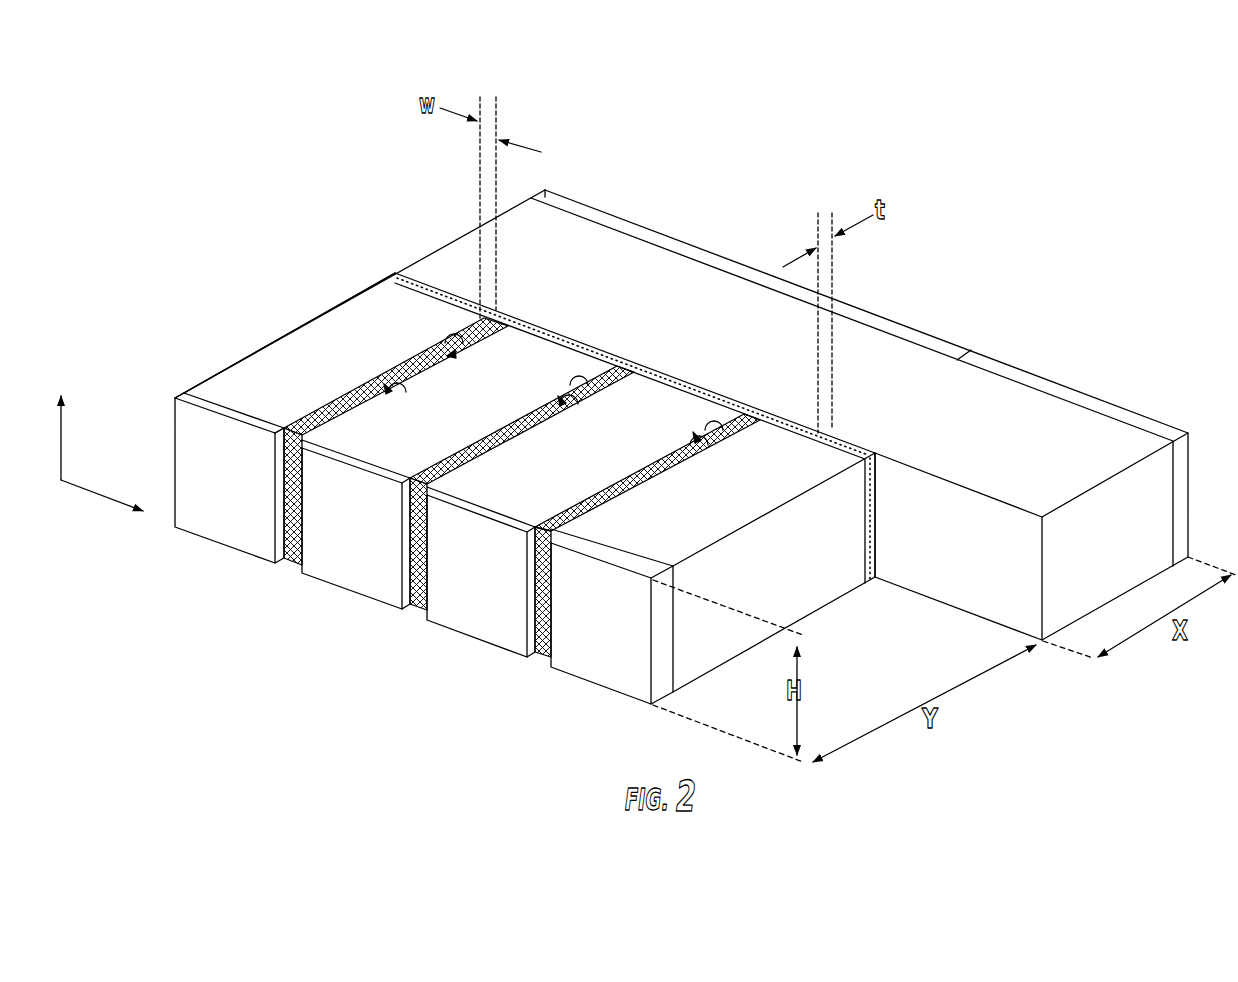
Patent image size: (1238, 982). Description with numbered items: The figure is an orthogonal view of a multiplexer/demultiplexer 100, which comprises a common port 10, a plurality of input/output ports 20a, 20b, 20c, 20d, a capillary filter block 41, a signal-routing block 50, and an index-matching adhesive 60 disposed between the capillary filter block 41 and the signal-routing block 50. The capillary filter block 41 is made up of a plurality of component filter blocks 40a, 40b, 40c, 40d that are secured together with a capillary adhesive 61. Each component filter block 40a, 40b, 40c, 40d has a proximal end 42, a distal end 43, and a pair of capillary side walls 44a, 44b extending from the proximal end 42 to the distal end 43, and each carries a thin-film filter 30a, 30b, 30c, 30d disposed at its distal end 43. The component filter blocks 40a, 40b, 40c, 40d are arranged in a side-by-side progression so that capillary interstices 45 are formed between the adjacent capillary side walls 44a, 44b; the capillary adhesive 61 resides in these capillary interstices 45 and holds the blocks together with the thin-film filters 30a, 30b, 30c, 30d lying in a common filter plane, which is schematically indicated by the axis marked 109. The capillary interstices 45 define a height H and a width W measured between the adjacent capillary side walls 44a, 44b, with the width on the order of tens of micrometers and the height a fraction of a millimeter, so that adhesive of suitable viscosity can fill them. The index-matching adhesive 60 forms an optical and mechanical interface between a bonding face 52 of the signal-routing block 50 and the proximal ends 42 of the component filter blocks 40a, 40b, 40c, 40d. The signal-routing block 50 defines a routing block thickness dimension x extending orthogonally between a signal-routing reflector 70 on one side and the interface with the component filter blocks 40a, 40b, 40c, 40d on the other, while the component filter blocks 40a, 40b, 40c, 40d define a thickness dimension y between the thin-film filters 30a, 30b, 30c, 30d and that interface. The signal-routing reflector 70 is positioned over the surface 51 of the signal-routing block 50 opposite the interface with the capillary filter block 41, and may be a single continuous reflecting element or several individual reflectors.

The multiplexer/demultiplexer 100 is at (1045, 168).
The common port 10 is at (1168, 358).
The input/output port 20a is at (548, 690).
The input/output port 20b is at (425, 640).
The input/output port 20c is at (300, 590).
The input/output port 20d is at (175, 542).
The thin-film filter 30a is at (600, 662).
The thin-film filter 30b is at (472, 617).
The thin-film filter 30c is at (348, 570).
The thin-film filter 30d is at (262, 535).
The component filter block 40a is at (810, 597).
The component filter block 40b is at (665, 393).
The component filter block 40c is at (530, 345).
The component filter block 40d is at (312, 343).
The capillary filter block 41 is at (214, 320).
The proximal end 42 is at (417, 272).
The distal end 43 is at (260, 413).
The capillary side wall 44a is at (480, 340).
The capillary side wall 44b is at (400, 362).
The capillary interstice 45 is at (432, 355).
The signal-routing block 50 is at (1068, 420).
The surface of the signal-routing block 51 is at (1003, 360).
The bonding face 52 is at (987, 585).
The index-matching adhesive 60 is at (398, 270).
The capillary adhesive 61 is at (353, 392).
The signal-routing reflector 70 is at (683, 248).
The common filter plane axis 109 is at (61, 445).